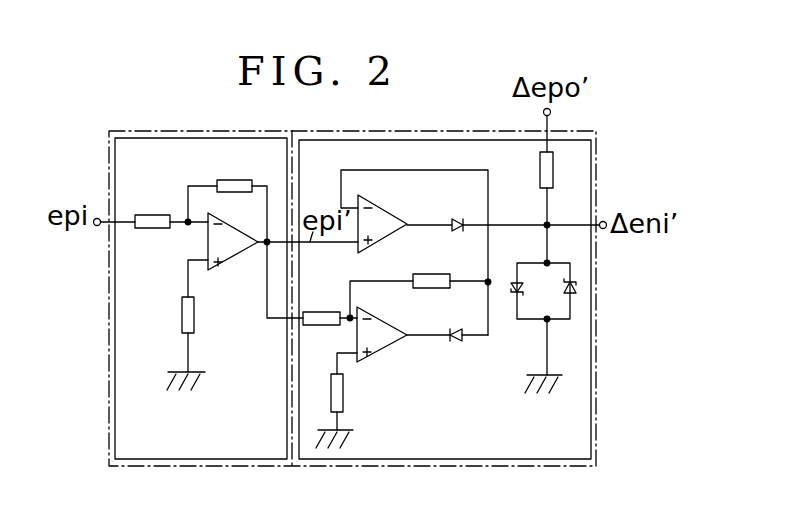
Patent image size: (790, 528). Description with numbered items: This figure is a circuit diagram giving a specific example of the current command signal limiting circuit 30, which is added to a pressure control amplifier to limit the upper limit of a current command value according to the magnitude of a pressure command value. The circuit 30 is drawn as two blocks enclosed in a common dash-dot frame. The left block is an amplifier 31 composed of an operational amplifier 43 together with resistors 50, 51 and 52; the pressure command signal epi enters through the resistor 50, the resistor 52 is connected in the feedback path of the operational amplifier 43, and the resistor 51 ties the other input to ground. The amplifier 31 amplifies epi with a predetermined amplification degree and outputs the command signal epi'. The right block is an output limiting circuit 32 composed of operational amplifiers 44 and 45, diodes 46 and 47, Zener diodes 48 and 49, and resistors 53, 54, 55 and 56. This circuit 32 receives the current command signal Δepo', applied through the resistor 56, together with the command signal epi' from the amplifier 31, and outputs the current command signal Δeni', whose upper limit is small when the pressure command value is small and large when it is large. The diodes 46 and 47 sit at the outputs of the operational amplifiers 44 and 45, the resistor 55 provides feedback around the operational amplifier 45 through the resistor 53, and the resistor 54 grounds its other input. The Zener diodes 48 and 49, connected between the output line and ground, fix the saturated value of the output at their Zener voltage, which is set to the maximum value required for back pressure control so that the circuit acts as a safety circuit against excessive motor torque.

The current command signal limiting circuit 30 is at (333, 467).
The amplifier 31 is at (122, 412).
The output limiting circuit 32 is at (573, 430).
The operational amplifier 43 is at (242, 248).
The operational amplifier 44 is at (389, 228).
The operational amplifier 45 is at (387, 345).
The diode 46 is at (456, 220).
The diode 47 is at (460, 347).
The Zener diode 48 is at (517, 296).
The Zener diode 49 is at (576, 290).
The resistor 50 is at (148, 215).
The resistor 51 is at (182, 317).
The resistor 52 is at (234, 180).
The resistor 53 is at (319, 318).
The resistor 54 is at (343, 393).
The resistor 55 is at (434, 288).
The resistor 56 is at (553, 175).